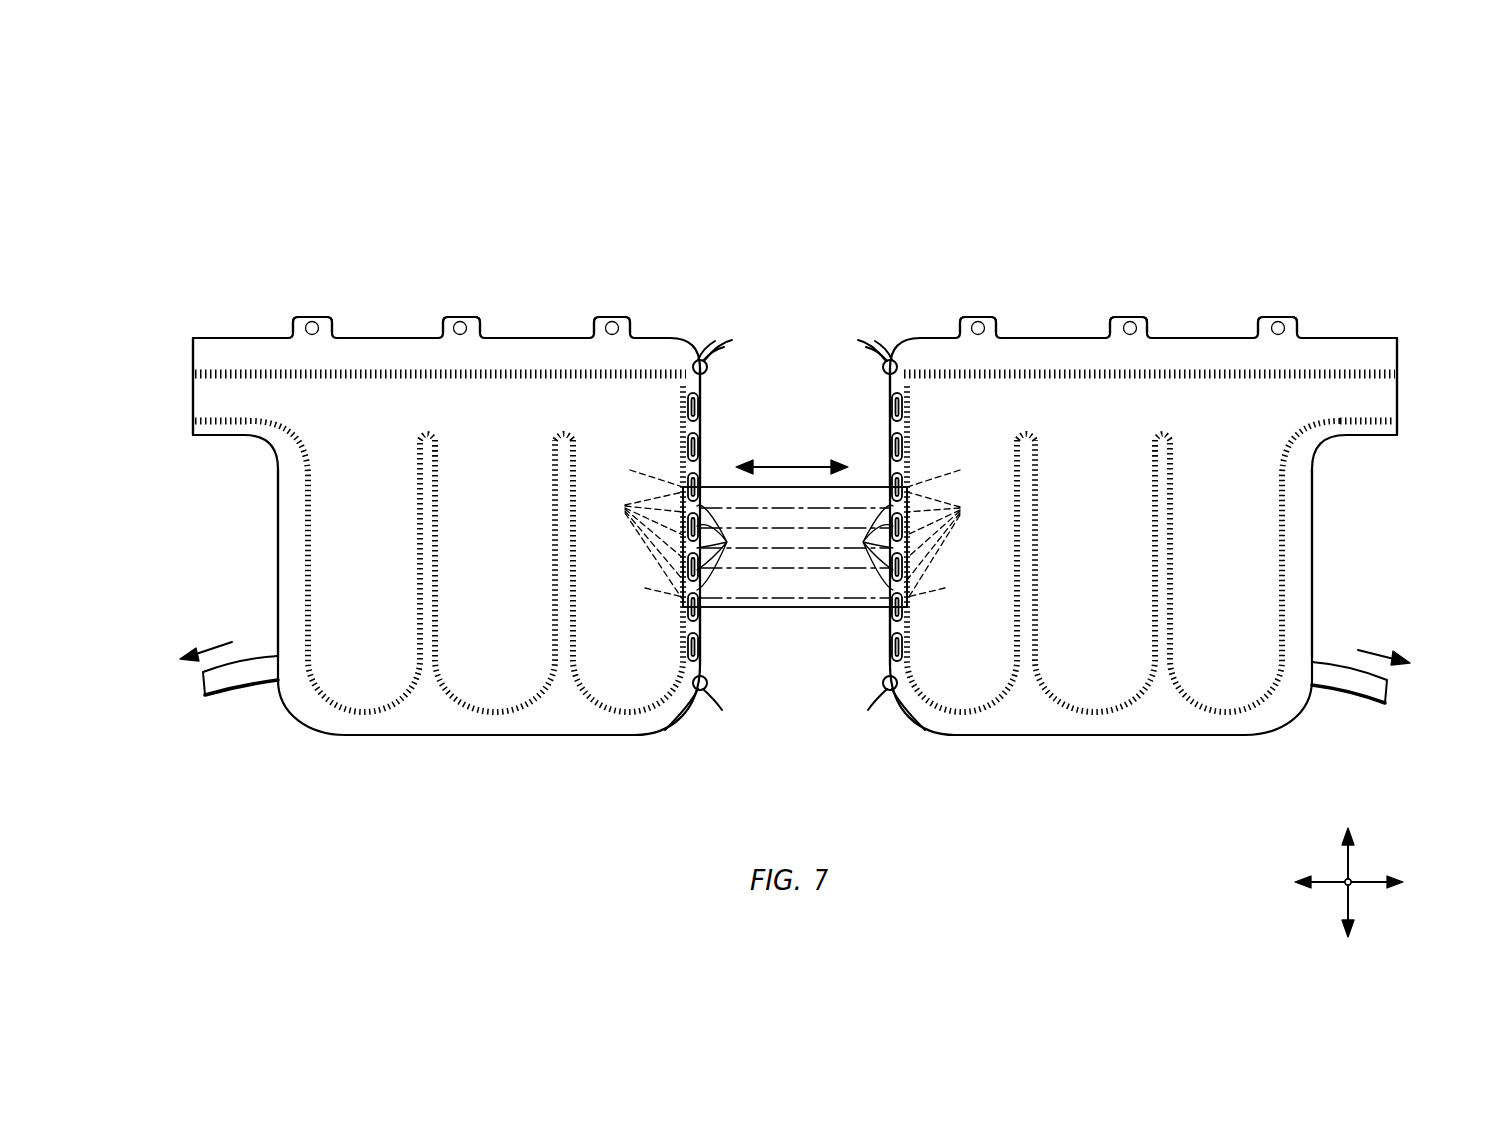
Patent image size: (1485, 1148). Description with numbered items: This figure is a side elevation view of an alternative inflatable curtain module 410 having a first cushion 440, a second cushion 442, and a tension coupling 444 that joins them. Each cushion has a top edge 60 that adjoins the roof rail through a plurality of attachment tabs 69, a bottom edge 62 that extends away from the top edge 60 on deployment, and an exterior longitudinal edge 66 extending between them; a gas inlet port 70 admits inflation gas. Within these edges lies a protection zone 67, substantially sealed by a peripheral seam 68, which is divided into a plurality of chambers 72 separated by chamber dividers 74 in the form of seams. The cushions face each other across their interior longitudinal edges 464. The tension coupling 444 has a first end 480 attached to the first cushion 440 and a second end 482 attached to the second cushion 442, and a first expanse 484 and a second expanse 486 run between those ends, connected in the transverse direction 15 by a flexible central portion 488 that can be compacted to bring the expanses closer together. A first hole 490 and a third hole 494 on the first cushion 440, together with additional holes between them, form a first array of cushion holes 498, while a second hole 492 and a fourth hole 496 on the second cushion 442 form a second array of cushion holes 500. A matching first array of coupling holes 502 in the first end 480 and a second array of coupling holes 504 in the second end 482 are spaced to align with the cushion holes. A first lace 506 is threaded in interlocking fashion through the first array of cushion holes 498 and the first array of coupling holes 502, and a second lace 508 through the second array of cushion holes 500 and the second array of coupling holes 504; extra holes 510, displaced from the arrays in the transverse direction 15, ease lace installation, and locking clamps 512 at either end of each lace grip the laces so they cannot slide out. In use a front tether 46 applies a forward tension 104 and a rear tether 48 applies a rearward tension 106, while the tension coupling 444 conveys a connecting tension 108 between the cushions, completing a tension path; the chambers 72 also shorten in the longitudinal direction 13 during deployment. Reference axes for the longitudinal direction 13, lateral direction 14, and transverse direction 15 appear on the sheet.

The longitudinal direction 13 is at (1365, 884).
The lateral direction 14 is at (1352, 878).
The transverse direction 15 is at (1348, 856).
The front tether 46 is at (235, 690).
The rear tether 48 is at (1350, 695).
The top edge 60 is at (545, 355).
The bottom edge 62 is at (465, 725).
The exterior longitudinal edge 66 is at (277, 503).
The protection zone 67 is at (500, 490).
The peripheral seam 68 is at (457, 383).
The attachment tabs 69 is at (295, 325).
The gas inlet port 70 is at (205, 383).
The chambers 72 is at (374, 559).
The chamber dividers 74 is at (560, 637).
The forward tension 104 is at (1375, 652).
The rearward tension 106 is at (213, 642).
The connecting tension 108 is at (791, 462).
The inflatable curtain module 410 is at (877, 238).
The first cushion 440 is at (432, 246).
The second cushion 442 is at (1141, 250).
The tension coupling 444 is at (766, 406).
The interior longitudinal edges 464 is at (704, 670).
The first end 480 is at (716, 485).
The second end 482 is at (875, 485).
The first expanse 484 is at (729, 493).
The second expanse 486 is at (753, 600).
The flexible central portion 488 is at (793, 563).
The first hole 490 is at (638, 472).
The second hole 492 is at (948, 472).
The third hole 494 is at (648, 588).
The fourth hole 496 is at (950, 588).
The first array of cushion holes 498 is at (636, 546).
The second array of cushion holes 500 is at (948, 546).
The first array of coupling holes 502 is at (775, 545).
The second array of coupling holes 504 is at (863, 545).
The first lace 506 is at (699, 355).
The second lace 508 is at (868, 352).
The extra holes 510 is at (688, 458).
The locking clamps 512 is at (713, 352).